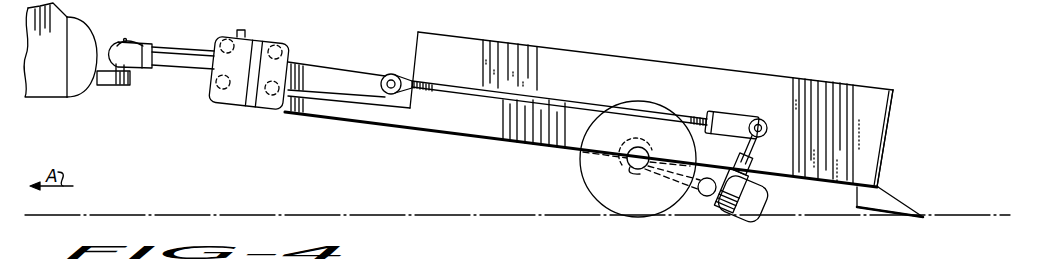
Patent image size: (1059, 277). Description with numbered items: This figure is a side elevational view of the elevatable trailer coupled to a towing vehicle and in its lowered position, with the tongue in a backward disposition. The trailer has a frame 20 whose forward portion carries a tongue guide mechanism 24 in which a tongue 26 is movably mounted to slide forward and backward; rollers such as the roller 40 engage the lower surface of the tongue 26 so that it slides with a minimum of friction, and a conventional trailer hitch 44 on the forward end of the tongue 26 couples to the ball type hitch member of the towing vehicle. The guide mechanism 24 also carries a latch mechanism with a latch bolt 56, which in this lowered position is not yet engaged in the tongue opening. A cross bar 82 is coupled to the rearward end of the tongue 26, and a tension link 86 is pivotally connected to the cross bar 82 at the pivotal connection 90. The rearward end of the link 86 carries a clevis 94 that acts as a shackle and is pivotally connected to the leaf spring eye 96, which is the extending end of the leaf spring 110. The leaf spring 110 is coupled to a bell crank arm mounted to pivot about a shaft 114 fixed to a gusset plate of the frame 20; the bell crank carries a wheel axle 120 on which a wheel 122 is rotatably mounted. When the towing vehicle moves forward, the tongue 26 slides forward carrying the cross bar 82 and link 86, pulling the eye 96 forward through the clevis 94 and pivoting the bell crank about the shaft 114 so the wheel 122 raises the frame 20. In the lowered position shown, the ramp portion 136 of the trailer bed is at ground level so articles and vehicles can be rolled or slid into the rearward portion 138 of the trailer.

The frame 20 is at (461, 122).
The tongue guide mechanism 24 is at (243, 117).
The tongue 26 is at (194, 47).
The roller 40 is at (64, 97).
The trailer hitch 44 is at (118, 42).
The latch bolt 56 is at (246, 31).
The cross bar 82 is at (382, 76).
The tension link 86 is at (575, 103).
The pivotal connection 90 is at (393, 74).
The clevis 94 is at (746, 112).
The leaf spring eye 96 is at (764, 134).
The leaf spring 110 is at (751, 183).
The shaft 114 is at (737, 196).
The wheel axle 120 is at (638, 172).
The wheel 122 is at (588, 178).
The ramp portion 136 is at (897, 198).
The rearward portion 138 is at (888, 126).